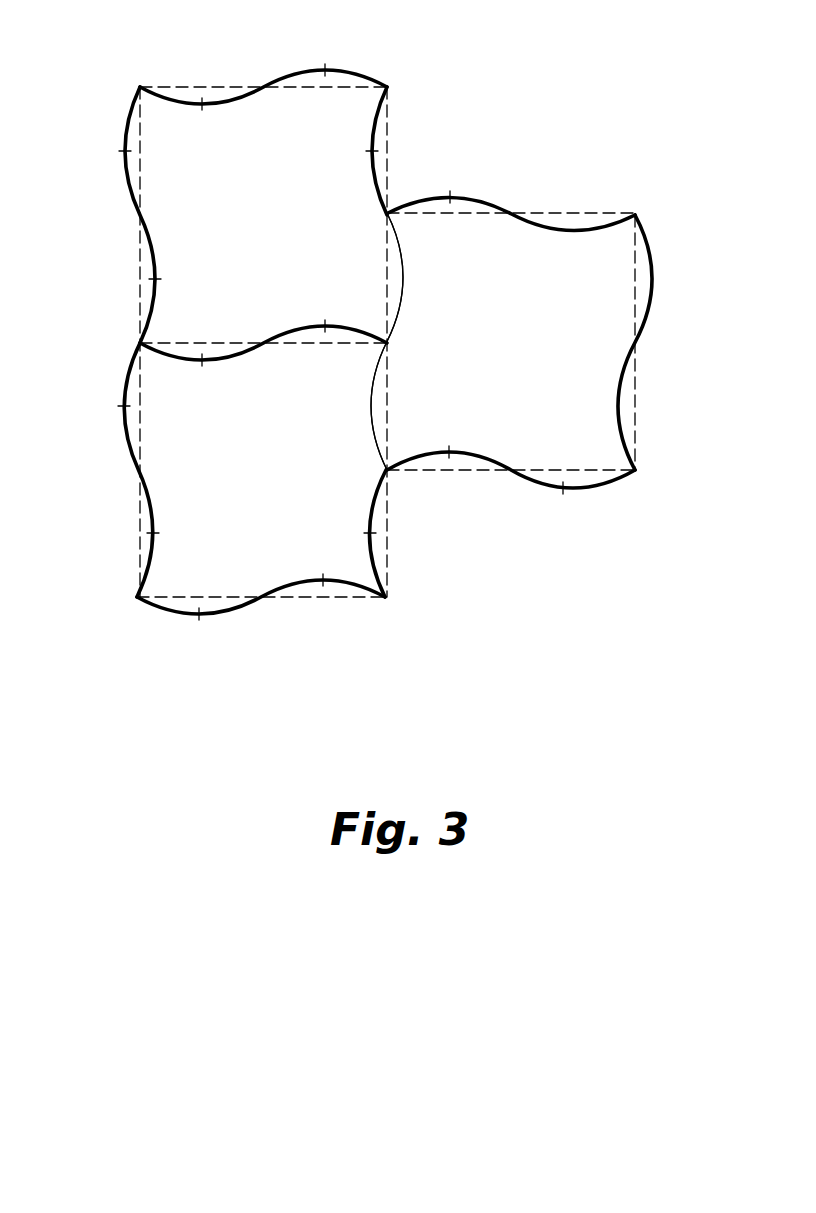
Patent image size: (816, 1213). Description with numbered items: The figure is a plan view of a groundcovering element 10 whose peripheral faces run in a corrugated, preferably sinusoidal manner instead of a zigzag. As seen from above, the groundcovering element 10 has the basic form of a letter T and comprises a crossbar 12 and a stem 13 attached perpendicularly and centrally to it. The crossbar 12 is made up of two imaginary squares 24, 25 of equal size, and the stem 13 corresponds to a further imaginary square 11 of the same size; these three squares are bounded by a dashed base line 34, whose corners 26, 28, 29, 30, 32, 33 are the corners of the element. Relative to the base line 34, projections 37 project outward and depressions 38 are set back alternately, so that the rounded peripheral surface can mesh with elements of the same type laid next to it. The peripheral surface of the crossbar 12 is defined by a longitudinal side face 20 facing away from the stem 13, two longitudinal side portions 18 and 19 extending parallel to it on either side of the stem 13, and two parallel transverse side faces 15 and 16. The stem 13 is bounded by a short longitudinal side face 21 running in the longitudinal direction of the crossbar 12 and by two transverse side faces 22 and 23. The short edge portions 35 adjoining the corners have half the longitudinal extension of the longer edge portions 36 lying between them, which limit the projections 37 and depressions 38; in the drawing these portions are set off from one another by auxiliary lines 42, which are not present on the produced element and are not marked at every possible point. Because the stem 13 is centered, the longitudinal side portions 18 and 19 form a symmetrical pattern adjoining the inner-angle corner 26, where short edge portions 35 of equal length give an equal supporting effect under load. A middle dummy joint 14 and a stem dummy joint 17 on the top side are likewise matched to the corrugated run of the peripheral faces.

The groundcovering element 10 is at (424, 150).
The square 11 is at (540, 357).
The crossbar 12 is at (299, 120).
The stem 13 is at (521, 246).
The middle dummy joint 14 is at (247, 352).
The transverse side face 15 is at (259, 613).
The transverse side face 16 is at (268, 73).
The stem dummy joint 17 is at (401, 325).
The longitudinal side portion 18 is at (414, 552).
The longitudinal side portion 19 is at (387, 132).
The longitudinal side face 20 is at (114, 441).
The longitudinal side face 21 is at (398, 76).
The transverse side face 22 is at (503, 485).
The transverse side face 23 is at (499, 197).
The square 24 is at (272, 480).
The square 25 is at (282, 242).
The corner 26 is at (400, 481).
The corner 28 is at (388, 613).
The corner 29 is at (645, 483).
The corner 30 is at (647, 205).
The corner 32 is at (131, 77).
The corner 33 is at (132, 612).
The base line 34 is at (183, 85).
The short edge portion 35 is at (132, 116).
The long edge portion 36 is at (160, 242).
The projection 37 is at (128, 172).
The depression 38 is at (147, 297).
The auxiliary line 42 is at (202, 102).